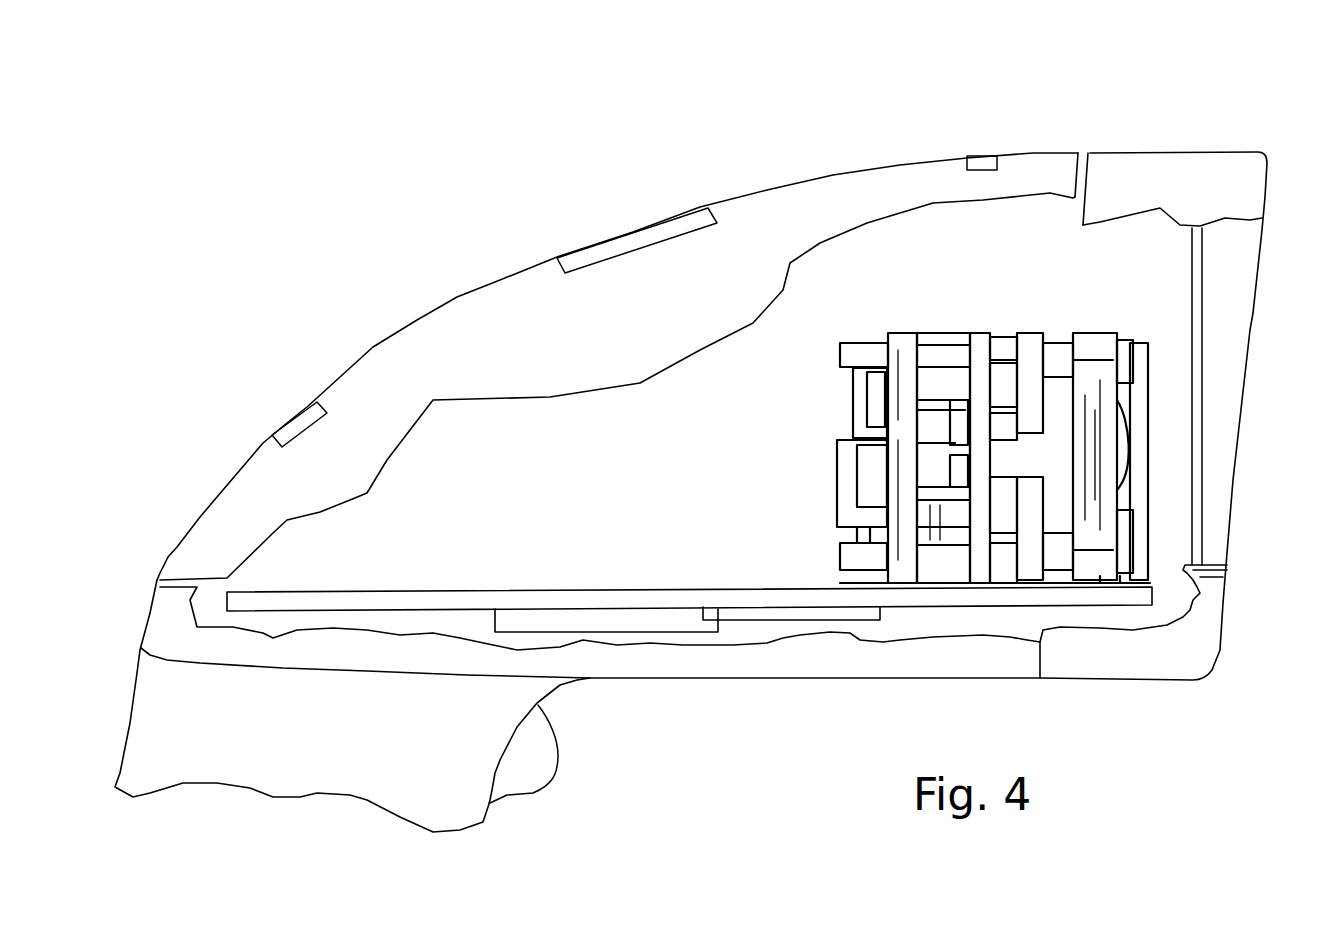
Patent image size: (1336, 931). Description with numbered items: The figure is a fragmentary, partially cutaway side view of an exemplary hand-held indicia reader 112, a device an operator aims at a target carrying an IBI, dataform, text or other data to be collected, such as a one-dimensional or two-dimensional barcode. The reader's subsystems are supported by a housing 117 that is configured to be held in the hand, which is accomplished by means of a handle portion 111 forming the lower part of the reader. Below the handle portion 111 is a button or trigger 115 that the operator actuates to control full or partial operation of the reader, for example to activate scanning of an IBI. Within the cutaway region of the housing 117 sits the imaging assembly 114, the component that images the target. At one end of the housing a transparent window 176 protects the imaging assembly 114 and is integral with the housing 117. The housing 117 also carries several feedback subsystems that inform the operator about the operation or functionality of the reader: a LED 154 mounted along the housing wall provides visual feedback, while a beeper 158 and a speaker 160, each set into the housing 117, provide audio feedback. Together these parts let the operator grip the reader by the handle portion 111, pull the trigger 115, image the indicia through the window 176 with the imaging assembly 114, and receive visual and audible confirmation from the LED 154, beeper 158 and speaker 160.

The handle portion 111 is at (318, 750).
The indicia reader 112 is at (704, 416).
The imaging assembly 114 is at (809, 416).
The trigger 115 is at (558, 760).
The housing 117 is at (373, 350).
The LED 154 is at (983, 153).
The beeper 158 is at (300, 427).
The speaker 160 is at (643, 232).
The transparent window 176 is at (1202, 286).